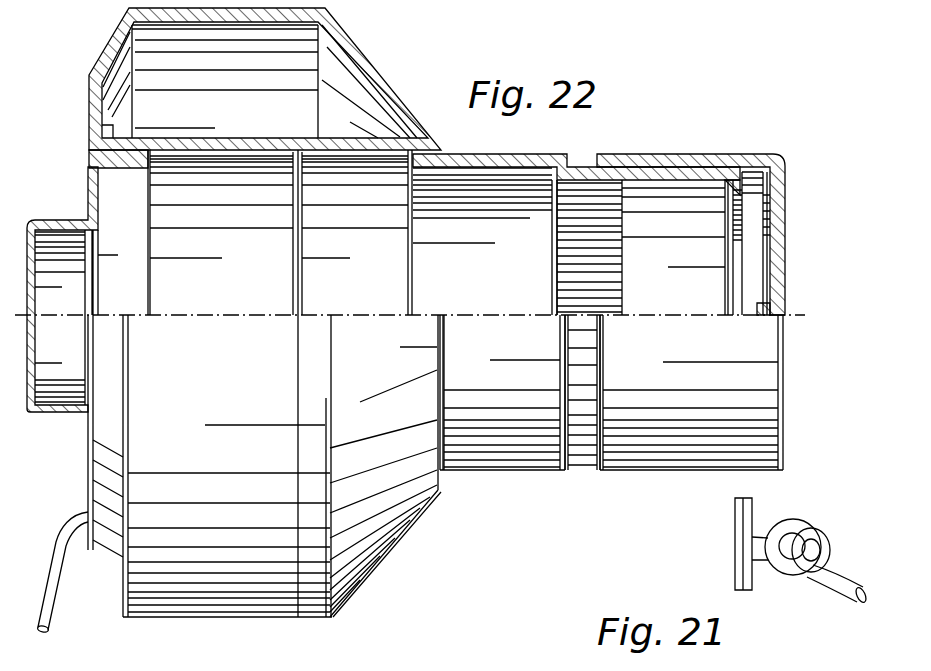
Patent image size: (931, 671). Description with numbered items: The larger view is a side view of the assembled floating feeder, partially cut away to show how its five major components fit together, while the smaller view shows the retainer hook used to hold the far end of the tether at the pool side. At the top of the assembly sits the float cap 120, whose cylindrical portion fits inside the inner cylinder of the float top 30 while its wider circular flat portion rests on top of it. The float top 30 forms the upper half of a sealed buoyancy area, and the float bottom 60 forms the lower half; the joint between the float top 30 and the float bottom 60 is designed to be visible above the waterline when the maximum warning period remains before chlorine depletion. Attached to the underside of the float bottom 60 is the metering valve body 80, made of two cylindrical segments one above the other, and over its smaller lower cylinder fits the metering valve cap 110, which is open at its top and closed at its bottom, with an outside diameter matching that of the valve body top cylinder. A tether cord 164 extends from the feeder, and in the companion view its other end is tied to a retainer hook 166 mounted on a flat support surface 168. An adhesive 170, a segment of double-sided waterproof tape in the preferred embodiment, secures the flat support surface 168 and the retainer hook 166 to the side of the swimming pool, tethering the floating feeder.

In FIG. 22, the float top 30 is at (100, 37).
In FIG. 22, the float bottom 60 is at (378, 44).
In FIG. 22, the metering valve body 80 is at (500, 145).
In FIG. 22, the metering valve cap 110 is at (786, 363).
In FIG. 22, the float cap 120 is at (70, 208).
In FIG. 22, the tether cord 164 is at (48, 578).
In FIG. 21, the tether cord 164 is at (835, 578).
In FIG. 21, the retainer hook 166 is at (813, 531).
In FIG. 21, the flat support surface 168 is at (755, 509).
In FIG. 21, the adhesive 170 is at (735, 506).